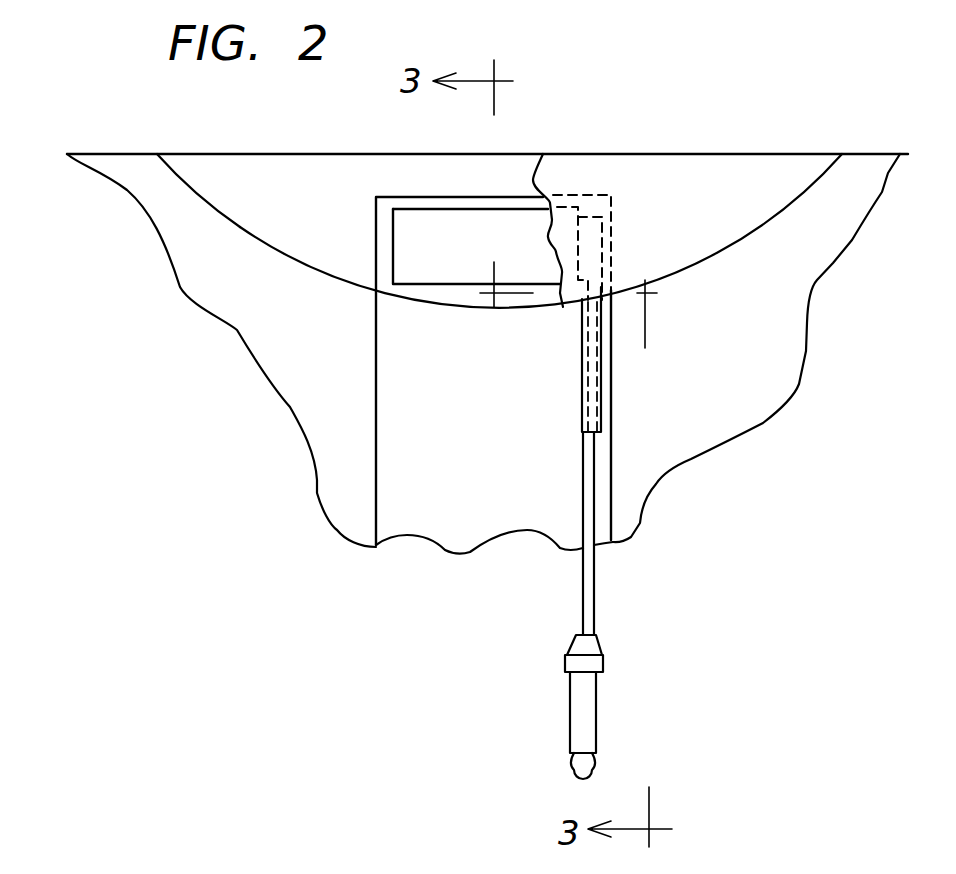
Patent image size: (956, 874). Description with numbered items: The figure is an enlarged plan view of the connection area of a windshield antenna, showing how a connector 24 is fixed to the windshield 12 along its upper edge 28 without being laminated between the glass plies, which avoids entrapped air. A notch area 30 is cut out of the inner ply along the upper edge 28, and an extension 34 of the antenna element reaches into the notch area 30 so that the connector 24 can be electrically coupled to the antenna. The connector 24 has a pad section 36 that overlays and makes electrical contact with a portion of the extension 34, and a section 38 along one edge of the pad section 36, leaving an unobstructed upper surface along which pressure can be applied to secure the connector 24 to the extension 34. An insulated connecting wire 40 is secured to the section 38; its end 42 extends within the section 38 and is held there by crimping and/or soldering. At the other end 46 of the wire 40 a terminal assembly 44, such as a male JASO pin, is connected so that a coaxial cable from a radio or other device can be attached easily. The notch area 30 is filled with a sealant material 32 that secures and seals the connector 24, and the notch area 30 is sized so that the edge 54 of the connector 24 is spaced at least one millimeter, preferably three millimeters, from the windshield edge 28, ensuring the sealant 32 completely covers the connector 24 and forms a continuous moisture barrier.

The windshield 12 is at (192, 448).
The connector 24 is at (523, 604).
The upper edge 28 is at (110, 155).
The notch area 30 is at (225, 208).
The sealant material 32 is at (310, 163).
The extension 34 is at (377, 483).
The pad section 36 is at (477, 223).
The section 38 is at (590, 213).
The insulated connecting wire 40 is at (612, 483).
The end of wire 42 is at (600, 292).
The terminal assembly 44 is at (597, 688).
The end of wire 46 is at (592, 625).
The edge of the connector 54 is at (432, 208).